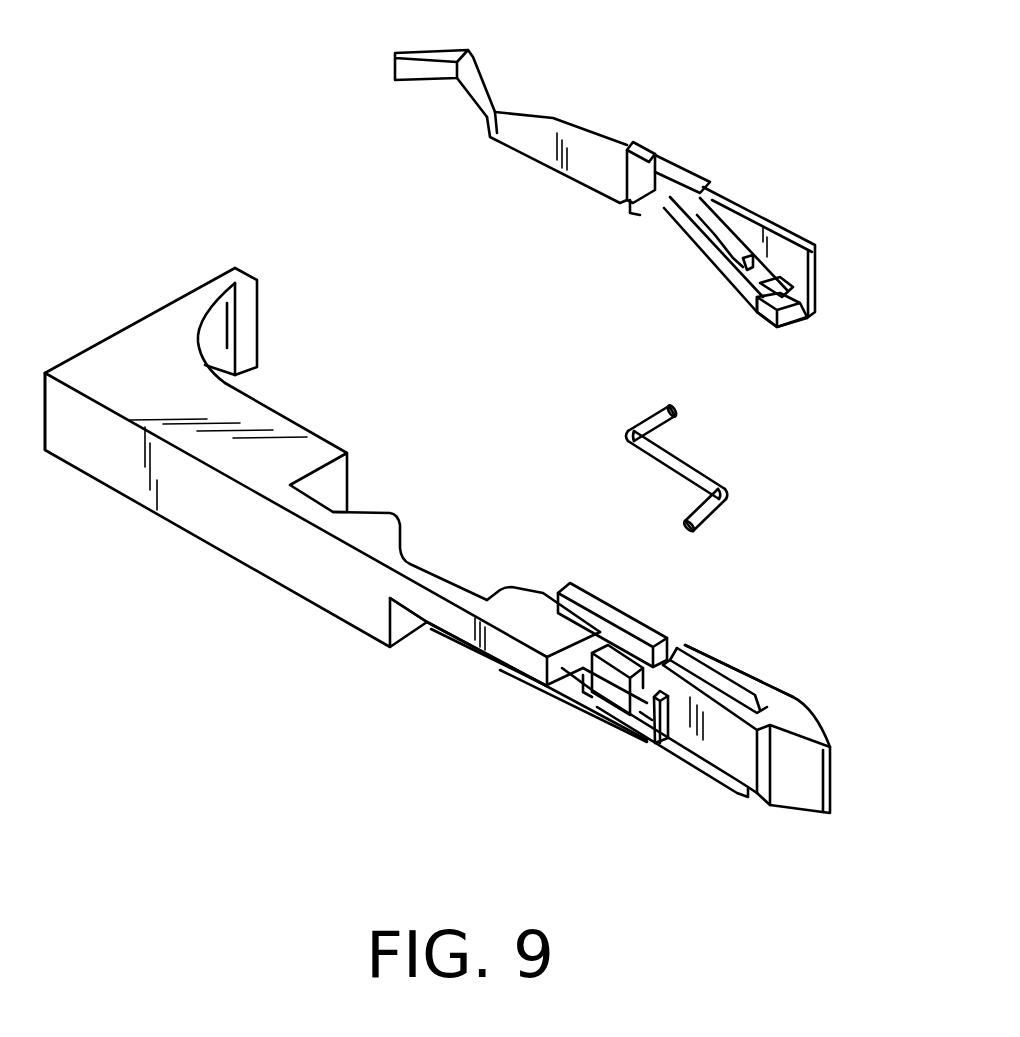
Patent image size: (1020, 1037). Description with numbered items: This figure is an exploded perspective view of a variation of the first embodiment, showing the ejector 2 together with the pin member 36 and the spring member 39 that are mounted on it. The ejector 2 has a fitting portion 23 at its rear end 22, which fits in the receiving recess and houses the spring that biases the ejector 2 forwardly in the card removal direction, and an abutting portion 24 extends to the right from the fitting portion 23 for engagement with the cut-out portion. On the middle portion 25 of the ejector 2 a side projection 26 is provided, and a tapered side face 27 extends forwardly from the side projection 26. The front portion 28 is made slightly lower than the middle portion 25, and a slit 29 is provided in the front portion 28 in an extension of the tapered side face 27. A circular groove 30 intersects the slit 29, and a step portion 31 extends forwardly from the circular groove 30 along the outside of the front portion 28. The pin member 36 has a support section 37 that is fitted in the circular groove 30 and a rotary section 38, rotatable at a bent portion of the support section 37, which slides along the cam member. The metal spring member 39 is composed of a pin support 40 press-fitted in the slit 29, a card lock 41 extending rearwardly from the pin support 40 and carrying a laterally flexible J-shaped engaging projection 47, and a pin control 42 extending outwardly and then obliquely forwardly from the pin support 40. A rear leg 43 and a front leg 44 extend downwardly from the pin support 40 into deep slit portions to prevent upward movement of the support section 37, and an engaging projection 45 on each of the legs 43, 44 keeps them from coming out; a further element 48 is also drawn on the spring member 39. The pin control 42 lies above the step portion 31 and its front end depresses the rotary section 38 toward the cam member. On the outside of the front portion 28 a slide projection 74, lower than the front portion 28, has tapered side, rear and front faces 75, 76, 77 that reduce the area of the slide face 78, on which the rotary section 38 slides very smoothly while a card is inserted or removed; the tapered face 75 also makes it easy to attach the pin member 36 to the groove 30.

The ejector 2 is at (346, 476).
The rear end 22 is at (287, 410).
The fitting portion 23 is at (115, 362).
The abutting portion 24 is at (236, 282).
The middle portion 25 is at (368, 538).
The side projection 26 is at (393, 512).
The tapered side face 27 is at (447, 577).
The front portion 28 is at (726, 748).
The slit 29 is at (740, 695).
The circular groove 30 is at (672, 642).
The step portion 31 is at (731, 782).
The pin member 36 is at (707, 460).
The support section 37 is at (653, 417).
The rotary section 38 is at (710, 518).
The spring member 39 is at (648, 189).
The pin support 40 is at (780, 248).
The card lock 41 is at (570, 120).
The pin control 42 is at (707, 245).
The rear leg 43 is at (727, 273).
The front leg 44 is at (800, 283).
The engaging projection 45 is at (735, 262).
The J-shaped engaging projection 47 is at (470, 53).
The tip 48 is at (790, 318).
The slide projection 74 is at (647, 703).
The tapered side face 75 is at (742, 698).
The tapered rear face 76 is at (640, 698).
The tapered front face 77 is at (663, 722).
The slide face 78 is at (652, 737).